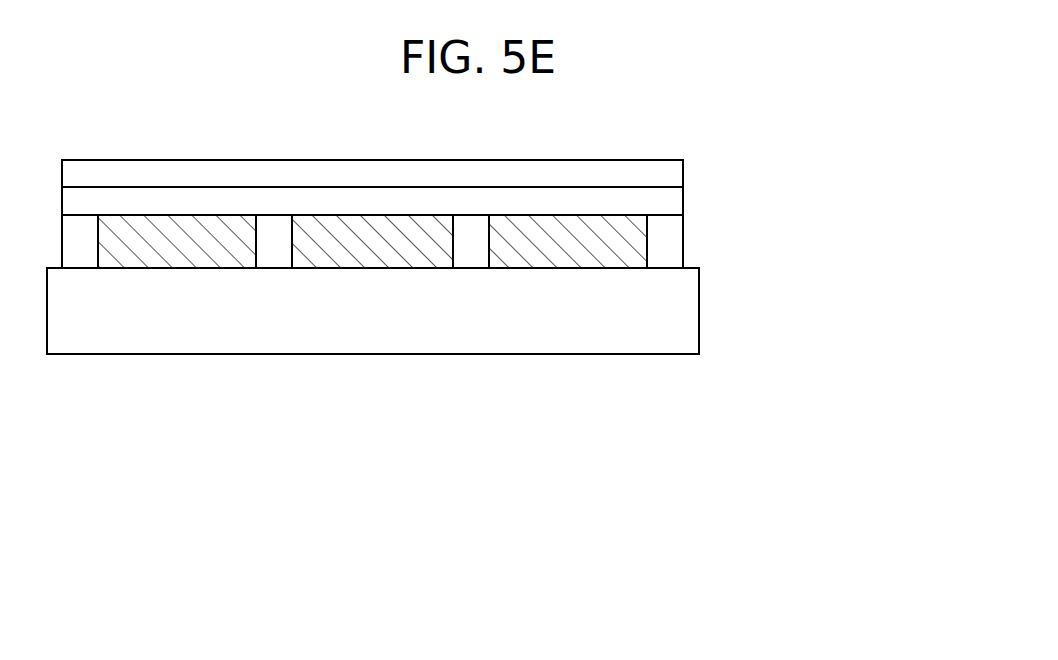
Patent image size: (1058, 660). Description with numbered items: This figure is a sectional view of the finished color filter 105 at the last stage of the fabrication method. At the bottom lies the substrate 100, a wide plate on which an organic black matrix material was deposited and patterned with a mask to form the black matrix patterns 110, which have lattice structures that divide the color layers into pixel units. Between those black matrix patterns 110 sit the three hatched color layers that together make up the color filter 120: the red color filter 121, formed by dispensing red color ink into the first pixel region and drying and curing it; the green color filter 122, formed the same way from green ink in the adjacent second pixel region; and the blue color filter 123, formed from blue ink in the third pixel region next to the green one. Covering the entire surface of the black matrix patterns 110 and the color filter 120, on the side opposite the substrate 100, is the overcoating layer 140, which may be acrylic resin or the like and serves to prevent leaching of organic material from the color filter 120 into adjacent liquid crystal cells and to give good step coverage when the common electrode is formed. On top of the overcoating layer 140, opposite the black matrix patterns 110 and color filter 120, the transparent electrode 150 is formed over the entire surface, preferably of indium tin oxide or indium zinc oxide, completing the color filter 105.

The substrate 100 is at (690, 311).
The color filter 105 is at (835, 167).
The black matrix patterns 110 is at (673, 240).
The color filter 120 is at (372, 344).
The red color filter 121 is at (223, 260).
The green color filter 122 is at (371, 260).
The blue color filter 123 is at (567, 318).
The overcoating layer 140 is at (673, 199).
The transparent electrode 150 is at (673, 170).